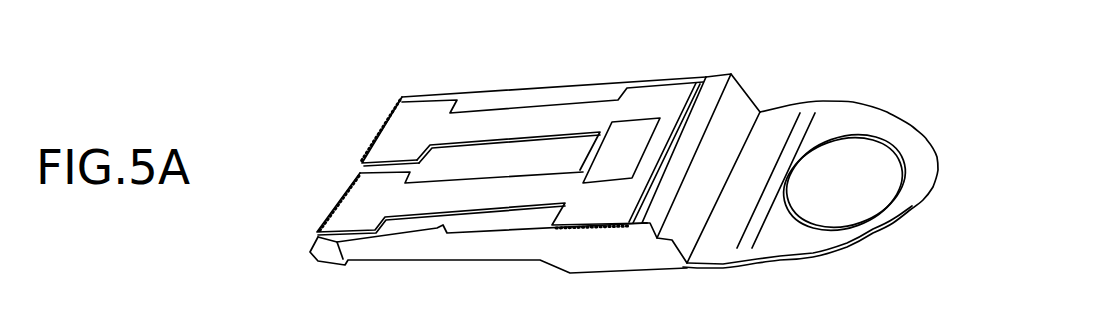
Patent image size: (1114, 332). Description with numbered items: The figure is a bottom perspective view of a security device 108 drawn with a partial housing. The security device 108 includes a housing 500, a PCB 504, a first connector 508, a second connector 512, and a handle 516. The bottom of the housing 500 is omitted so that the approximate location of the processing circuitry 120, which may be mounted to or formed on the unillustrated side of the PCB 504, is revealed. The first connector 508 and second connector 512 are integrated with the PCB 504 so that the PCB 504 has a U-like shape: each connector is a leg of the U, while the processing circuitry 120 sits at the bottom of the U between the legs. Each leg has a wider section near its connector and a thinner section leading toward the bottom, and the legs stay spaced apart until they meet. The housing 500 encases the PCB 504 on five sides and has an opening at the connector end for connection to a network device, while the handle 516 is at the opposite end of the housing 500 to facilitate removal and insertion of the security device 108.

The housing 500 is at (625, 260).
The PCB 504 is at (510, 127).
The first connector 508 is at (383, 128).
The second connector 512 is at (337, 210).
The processing circuitry 120 is at (641, 122).
The security device 108 is at (973, 120).
The handle 516 is at (938, 192).